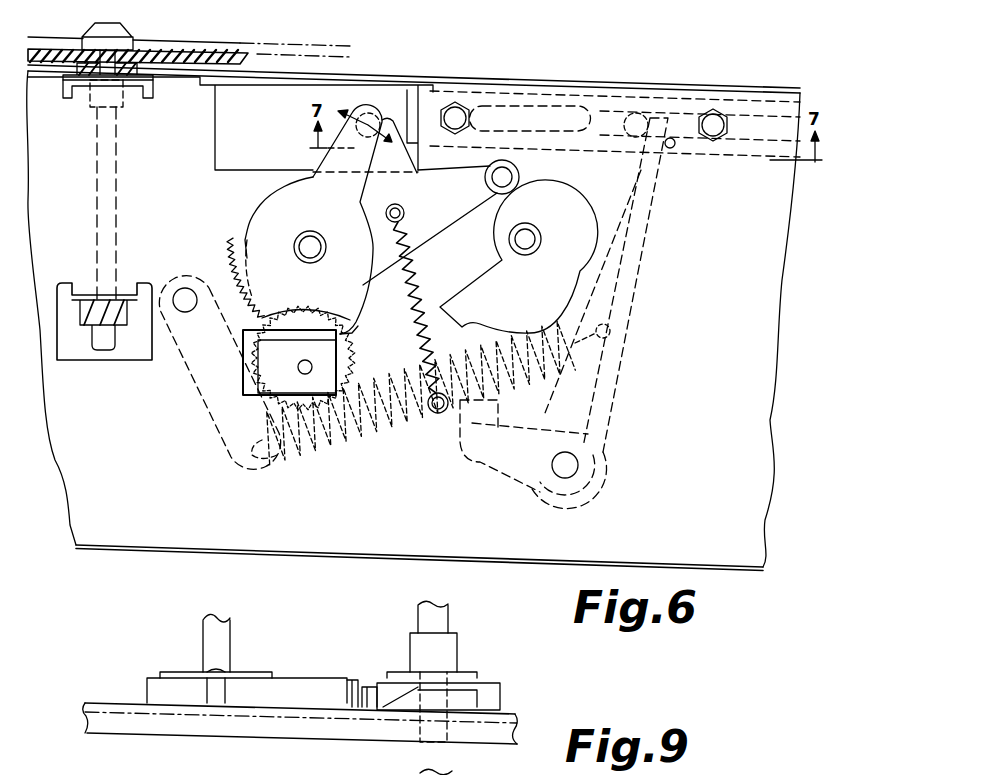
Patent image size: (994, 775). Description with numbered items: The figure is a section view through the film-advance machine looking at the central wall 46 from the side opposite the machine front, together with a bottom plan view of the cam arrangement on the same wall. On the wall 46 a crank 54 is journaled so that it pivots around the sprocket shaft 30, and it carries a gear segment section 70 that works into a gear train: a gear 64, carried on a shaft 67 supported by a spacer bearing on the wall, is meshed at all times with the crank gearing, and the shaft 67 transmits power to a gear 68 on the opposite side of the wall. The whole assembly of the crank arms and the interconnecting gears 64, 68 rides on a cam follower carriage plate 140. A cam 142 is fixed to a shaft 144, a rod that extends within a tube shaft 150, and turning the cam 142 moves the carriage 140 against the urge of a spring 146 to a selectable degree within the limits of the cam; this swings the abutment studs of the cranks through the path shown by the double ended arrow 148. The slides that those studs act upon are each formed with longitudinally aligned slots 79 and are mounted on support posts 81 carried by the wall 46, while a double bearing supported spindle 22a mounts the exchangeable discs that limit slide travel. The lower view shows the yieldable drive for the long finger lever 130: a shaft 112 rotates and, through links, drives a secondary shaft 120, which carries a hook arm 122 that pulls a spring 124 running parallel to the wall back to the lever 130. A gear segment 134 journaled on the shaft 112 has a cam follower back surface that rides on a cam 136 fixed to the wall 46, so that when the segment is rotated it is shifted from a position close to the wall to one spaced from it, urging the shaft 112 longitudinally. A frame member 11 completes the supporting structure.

In FIG. 6, the frame plate 11 is at (558, 88).
In FIG. 6, the double bearing supported spindle 22a is at (107, 172).
In FIG. 6, the shaft 30 is at (312, 250).
In FIG. 9, the central wall 46 is at (352, 735).
In FIG. 6, the crank 54 is at (262, 196).
In FIG. 6, the gear 64 is at (356, 366).
In FIG. 6, the shaft 67 is at (298, 367).
In FIG. 6, the gear 68 is at (352, 333).
In FIG. 6, the gear segment section 70 is at (230, 248).
In FIG. 6, the longitudinally aligned slots 79 is at (500, 118).
In FIG. 6, the support posts 81 is at (725, 128).
In FIG. 9, the shaft 112 is at (450, 615).
In FIG. 6, the secondary shaft 120 is at (570, 478).
In FIG. 6, the hook arm 122 is at (224, 427).
In FIG. 6, the spring 124 is at (372, 435).
In FIG. 6, the long finger lever 130 is at (645, 231).
In FIG. 9, the long finger lever 130 is at (478, 678).
In FIG. 9, the gear segment 134 is at (362, 682).
In FIG. 9, the cam 136 is at (322, 678).
In FIG. 6, the cam follower carriage plate 140 is at (441, 222).
In FIG. 6, the cam 142 is at (566, 194).
In FIG. 6, the shaft 144 is at (525, 256).
In FIG. 6, the spring 146 is at (425, 272).
In FIG. 6, the double ended arrow 148 is at (358, 94).
In FIG. 6, the tube shaft 150 is at (533, 230).